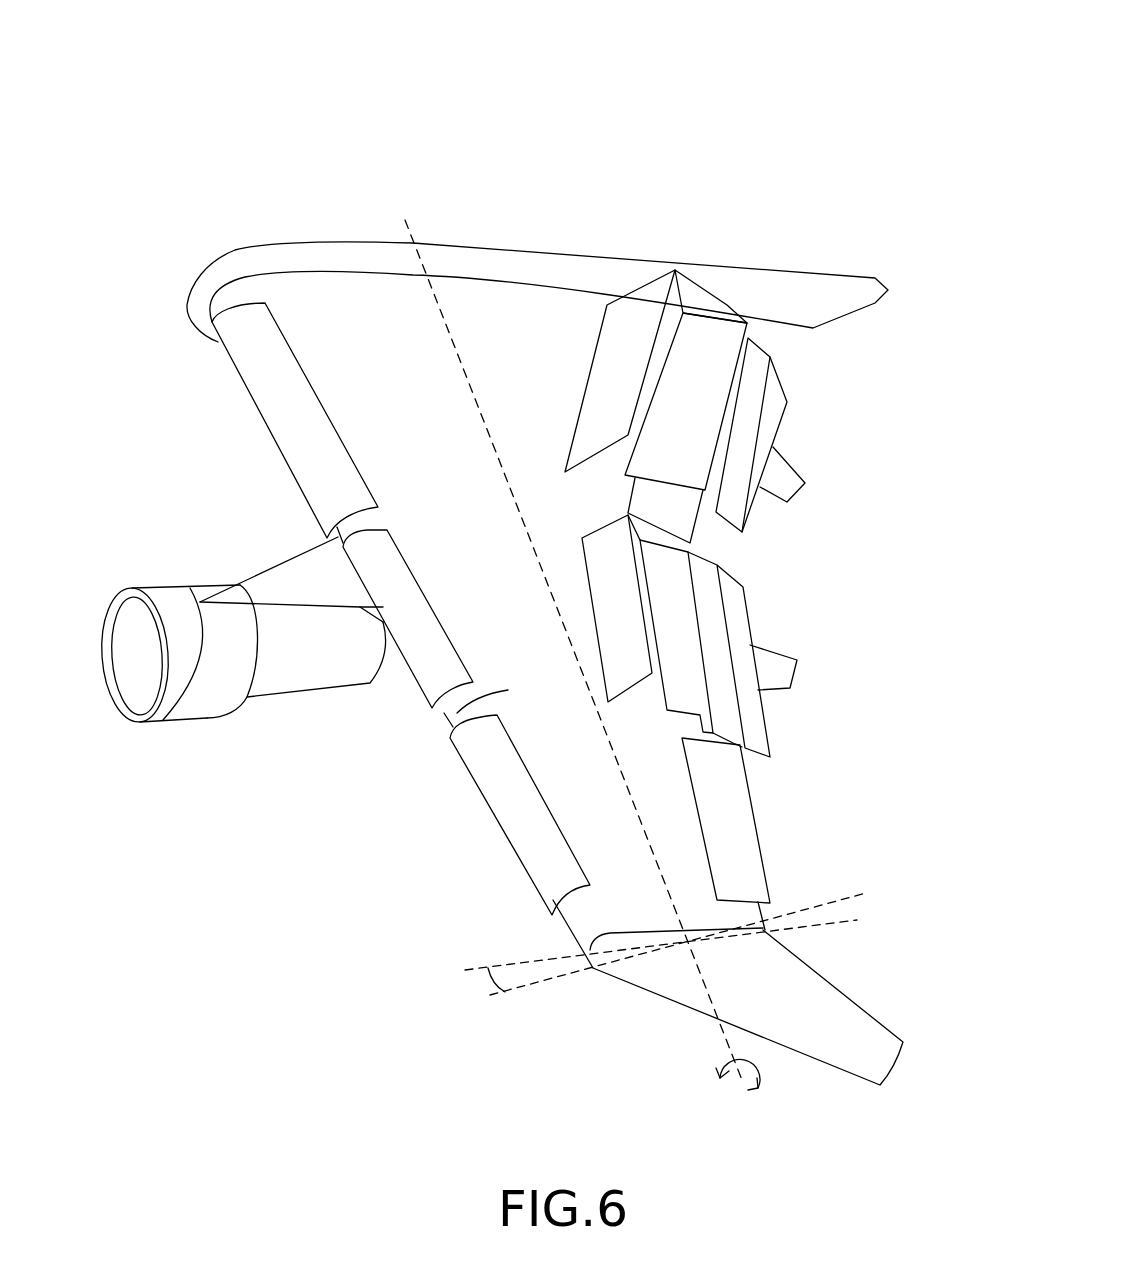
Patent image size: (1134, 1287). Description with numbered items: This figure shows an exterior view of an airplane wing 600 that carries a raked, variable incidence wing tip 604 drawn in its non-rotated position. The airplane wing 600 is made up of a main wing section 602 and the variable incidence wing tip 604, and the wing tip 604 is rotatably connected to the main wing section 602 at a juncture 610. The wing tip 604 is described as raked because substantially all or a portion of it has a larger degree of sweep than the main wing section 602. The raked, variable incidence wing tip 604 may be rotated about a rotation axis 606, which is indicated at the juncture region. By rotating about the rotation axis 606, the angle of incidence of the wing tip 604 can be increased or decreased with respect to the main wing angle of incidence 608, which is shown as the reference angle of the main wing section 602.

The airplane wing 600 is at (511, 554).
The main wing section 602 is at (447, 716).
The raked, variable incidence wing tip 604 is at (820, 988).
The rotation axis 606 is at (727, 1033).
The main wing angle of incidence 608 is at (488, 966).
The juncture 610 is at (605, 933).